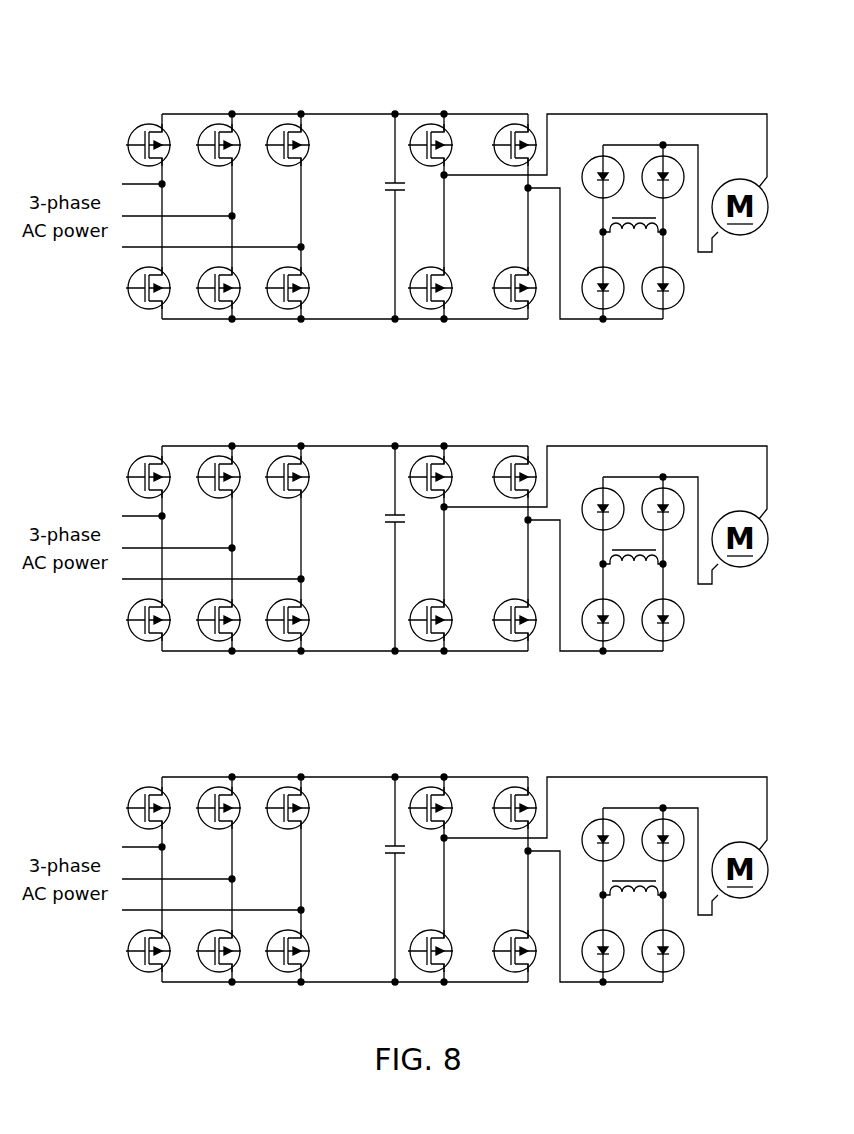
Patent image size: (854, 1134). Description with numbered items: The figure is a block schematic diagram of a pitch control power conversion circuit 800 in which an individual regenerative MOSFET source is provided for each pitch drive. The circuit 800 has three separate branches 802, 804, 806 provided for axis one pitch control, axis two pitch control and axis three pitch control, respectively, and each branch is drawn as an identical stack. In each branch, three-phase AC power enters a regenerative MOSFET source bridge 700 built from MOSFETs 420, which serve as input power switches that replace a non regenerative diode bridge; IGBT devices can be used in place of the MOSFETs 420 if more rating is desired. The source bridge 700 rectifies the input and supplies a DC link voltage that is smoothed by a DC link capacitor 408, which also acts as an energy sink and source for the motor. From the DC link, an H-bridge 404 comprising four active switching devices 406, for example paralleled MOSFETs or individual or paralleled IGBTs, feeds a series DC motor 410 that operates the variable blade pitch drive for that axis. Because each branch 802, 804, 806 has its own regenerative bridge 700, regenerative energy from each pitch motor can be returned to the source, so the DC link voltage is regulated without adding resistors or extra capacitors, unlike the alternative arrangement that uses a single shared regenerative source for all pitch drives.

The circuit 800 is at (614, 42).
The branch 802 is at (394, 190).
The branch 804 is at (394, 522).
The branch 806 is at (394, 853).
The regenerative MOSFET source bridge 700 is at (218, 504).
The MOSFETs 420 is at (218, 548).
The DC link capacitor 408 is at (377, 548).
The H-bridge 404 is at (472, 504).
The active switching devices 406 is at (472, 548).
The series DC motor 410 is at (756, 556).